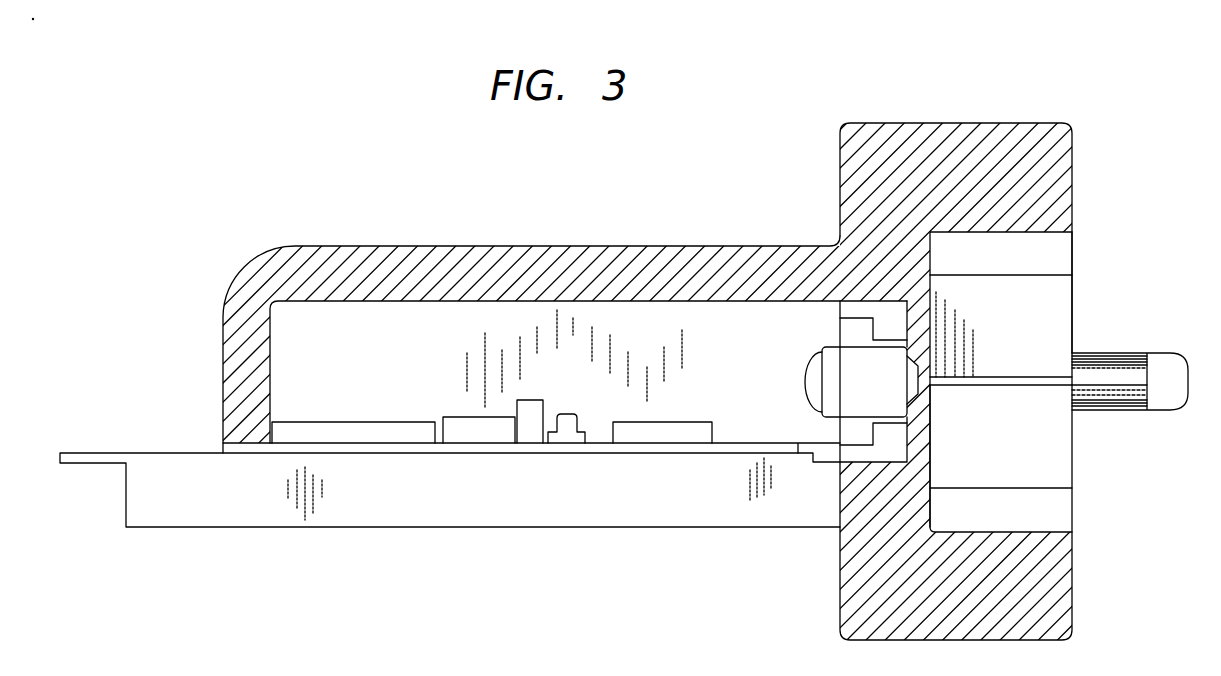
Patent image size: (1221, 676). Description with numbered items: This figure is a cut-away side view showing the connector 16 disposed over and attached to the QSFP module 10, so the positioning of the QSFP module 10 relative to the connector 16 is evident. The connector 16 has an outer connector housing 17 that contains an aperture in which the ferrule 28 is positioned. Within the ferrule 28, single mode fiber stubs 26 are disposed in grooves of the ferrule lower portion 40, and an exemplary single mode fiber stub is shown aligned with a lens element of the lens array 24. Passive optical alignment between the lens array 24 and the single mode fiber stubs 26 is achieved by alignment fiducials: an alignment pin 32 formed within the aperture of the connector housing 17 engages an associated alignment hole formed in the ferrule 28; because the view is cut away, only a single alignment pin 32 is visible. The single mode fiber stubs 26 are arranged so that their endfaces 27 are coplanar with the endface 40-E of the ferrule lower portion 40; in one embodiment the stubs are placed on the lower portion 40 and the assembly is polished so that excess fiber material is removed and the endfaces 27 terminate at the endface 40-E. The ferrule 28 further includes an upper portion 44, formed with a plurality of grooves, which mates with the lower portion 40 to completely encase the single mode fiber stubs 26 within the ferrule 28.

The QSFP module 10 is at (195, 470).
The connector 16 is at (345, 258).
The connector housing 17 is at (995, 127).
The lens array 24 is at (843, 398).
The single mode fiber stubs 26 is at (1015, 385).
The endfaces 27 is at (930, 385).
The ferrule 28 is at (1053, 303).
The alignment pin 32 is at (1128, 367).
The ferrule lower portion 40 is at (1032, 468).
The endface of ferrule lower portion 40-E is at (930, 463).
The upper portion 44 is at (1073, 330).